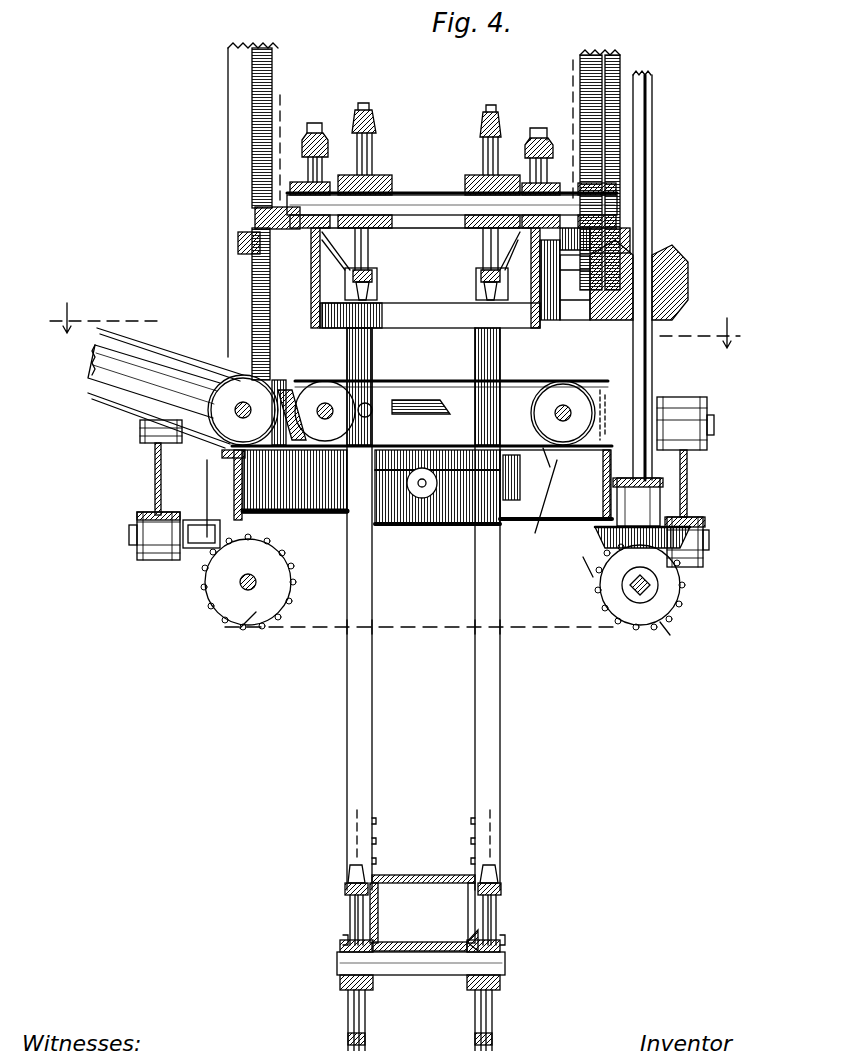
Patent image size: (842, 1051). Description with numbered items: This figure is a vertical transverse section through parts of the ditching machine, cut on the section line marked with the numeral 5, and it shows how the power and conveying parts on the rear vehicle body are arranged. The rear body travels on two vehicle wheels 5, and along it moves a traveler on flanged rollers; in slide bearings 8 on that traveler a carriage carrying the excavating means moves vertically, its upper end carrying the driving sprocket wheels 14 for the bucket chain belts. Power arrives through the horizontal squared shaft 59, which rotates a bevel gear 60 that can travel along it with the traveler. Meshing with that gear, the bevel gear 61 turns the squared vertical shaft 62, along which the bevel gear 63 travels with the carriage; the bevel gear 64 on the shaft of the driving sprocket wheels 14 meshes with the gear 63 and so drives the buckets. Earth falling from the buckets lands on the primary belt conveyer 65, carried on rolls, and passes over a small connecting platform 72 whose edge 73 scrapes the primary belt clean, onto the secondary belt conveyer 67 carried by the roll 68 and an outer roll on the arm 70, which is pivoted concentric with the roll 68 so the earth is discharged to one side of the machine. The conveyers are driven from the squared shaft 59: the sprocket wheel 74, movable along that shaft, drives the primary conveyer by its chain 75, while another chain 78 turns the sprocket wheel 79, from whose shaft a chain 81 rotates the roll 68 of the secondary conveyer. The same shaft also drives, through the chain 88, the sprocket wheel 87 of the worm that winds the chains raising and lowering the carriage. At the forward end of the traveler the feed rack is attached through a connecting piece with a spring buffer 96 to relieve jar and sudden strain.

The vehicle wheels 5 is at (394, 327).
The slide bearings 8 is at (256, 207).
The driving sprocket wheels 14 is at (487, 125).
The horizontal squared shaft 59 is at (645, 590).
The bevel gear 60 is at (670, 583).
The bevel gear 61 is at (677, 535).
The squared vertical shaft 62 is at (655, 355).
The bevel gear 63 is at (686, 265).
The bevel gear 64 is at (600, 226).
The primary belt conveyer 65 is at (447, 372).
The secondary belt conveyer 67 is at (193, 342).
The roll 68 is at (243, 410).
The arm 70 is at (154, 381).
The connecting platform 72 is at (283, 378).
The edge 73 is at (297, 380).
The sprocket wheel 74 is at (667, 617).
The chain 75 is at (585, 557).
The chain 78 is at (420, 641).
The sprocket wheel 79 is at (252, 615).
The chain 81 is at (201, 504).
The sprocket wheel 87 is at (382, 423).
The chain 88 is at (313, 553).
The spring buffer 96 is at (423, 498).